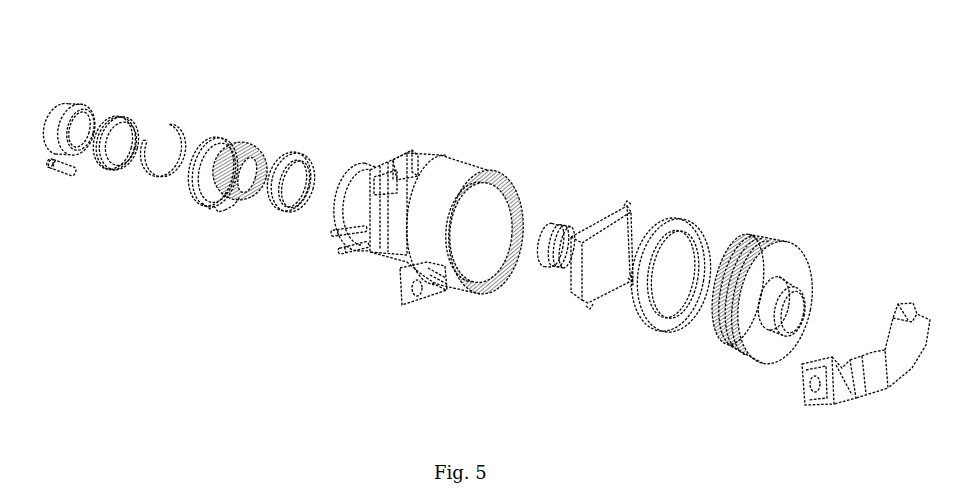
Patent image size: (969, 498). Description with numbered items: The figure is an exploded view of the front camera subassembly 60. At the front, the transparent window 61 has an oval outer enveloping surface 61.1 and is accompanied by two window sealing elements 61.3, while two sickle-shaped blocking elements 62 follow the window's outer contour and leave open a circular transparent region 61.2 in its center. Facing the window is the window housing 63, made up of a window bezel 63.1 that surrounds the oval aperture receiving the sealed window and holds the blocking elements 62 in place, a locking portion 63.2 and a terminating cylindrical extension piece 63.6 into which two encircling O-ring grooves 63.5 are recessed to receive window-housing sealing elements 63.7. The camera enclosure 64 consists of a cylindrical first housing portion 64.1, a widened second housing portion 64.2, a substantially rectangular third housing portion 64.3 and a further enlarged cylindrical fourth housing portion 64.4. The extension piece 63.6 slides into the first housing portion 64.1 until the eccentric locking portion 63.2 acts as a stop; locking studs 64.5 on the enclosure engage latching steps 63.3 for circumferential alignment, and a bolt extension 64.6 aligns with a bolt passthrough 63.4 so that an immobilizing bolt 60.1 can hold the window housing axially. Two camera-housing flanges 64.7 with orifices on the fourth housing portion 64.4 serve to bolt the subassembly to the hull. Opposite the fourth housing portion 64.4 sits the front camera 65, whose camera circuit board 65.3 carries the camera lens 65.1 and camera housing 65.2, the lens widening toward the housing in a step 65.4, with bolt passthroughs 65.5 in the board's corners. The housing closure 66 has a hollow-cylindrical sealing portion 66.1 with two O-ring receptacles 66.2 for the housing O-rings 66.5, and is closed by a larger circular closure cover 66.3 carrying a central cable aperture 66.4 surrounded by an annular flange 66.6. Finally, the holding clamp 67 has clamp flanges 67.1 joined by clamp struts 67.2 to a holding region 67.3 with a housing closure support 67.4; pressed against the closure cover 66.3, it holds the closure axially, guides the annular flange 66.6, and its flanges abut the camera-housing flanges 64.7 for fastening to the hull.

The front camera subassembly 60 is at (725, 97).
The immobilizing bolt 60.1 is at (59, 171).
The transparent window 61 is at (55, 123).
The oval outer enveloping surface 61.1 is at (65, 112).
The circular transparent region 61.2 is at (80, 125).
The window sealing elements 61.3 is at (133, 116).
The blocking elements 62 is at (172, 124).
The window housing 63 is at (193, 197).
The window bezel 63.1 is at (207, 143).
The locking portion 63.2 is at (207, 183).
The latching steps 63.3 is at (214, 202).
The bolt passthrough 63.4 is at (231, 201).
The O-ring grooves 63.5 is at (241, 151).
The cylindrical extension piece 63.6 is at (258, 148).
The window-housing sealing elements 63.7 is at (310, 158).
The camera enclosure 64 is at (460, 108).
The first housing portion 64.1 is at (358, 165).
The second housing portion 64.2 is at (387, 165).
The third housing portion 64.3 is at (402, 168).
The fourth housing portion 64.4 is at (473, 168).
The locking studs 64.5 is at (334, 238).
The bolt extension 64.6 is at (352, 249).
The camera-housing flanges 64.7 is at (407, 284).
The front camera 65 is at (594, 163).
The camera lens 65.1 is at (545, 255).
The camera housing 65.2 is at (575, 268).
The camera circuit board 65.3 is at (603, 214).
The step 65.4 is at (566, 226).
The bolt passthroughs 65.5 is at (626, 214).
The housing closure 66 is at (770, 163).
The sealing portion 66.1 is at (737, 240).
The O-ring receptacles 66.2 is at (759, 248).
The closure cover 66.3 is at (786, 243).
The cable aperture 66.4 is at (786, 298).
The housing O-rings 66.5 is at (681, 220).
The annular flange 66.6 is at (799, 307).
The holding clamp 67 is at (900, 283).
The clamp flanges 67.1 is at (808, 391).
The clamp struts 67.2 is at (842, 383).
The holding region 67.3 is at (880, 381).
The housing closure support 67.4 is at (893, 358).